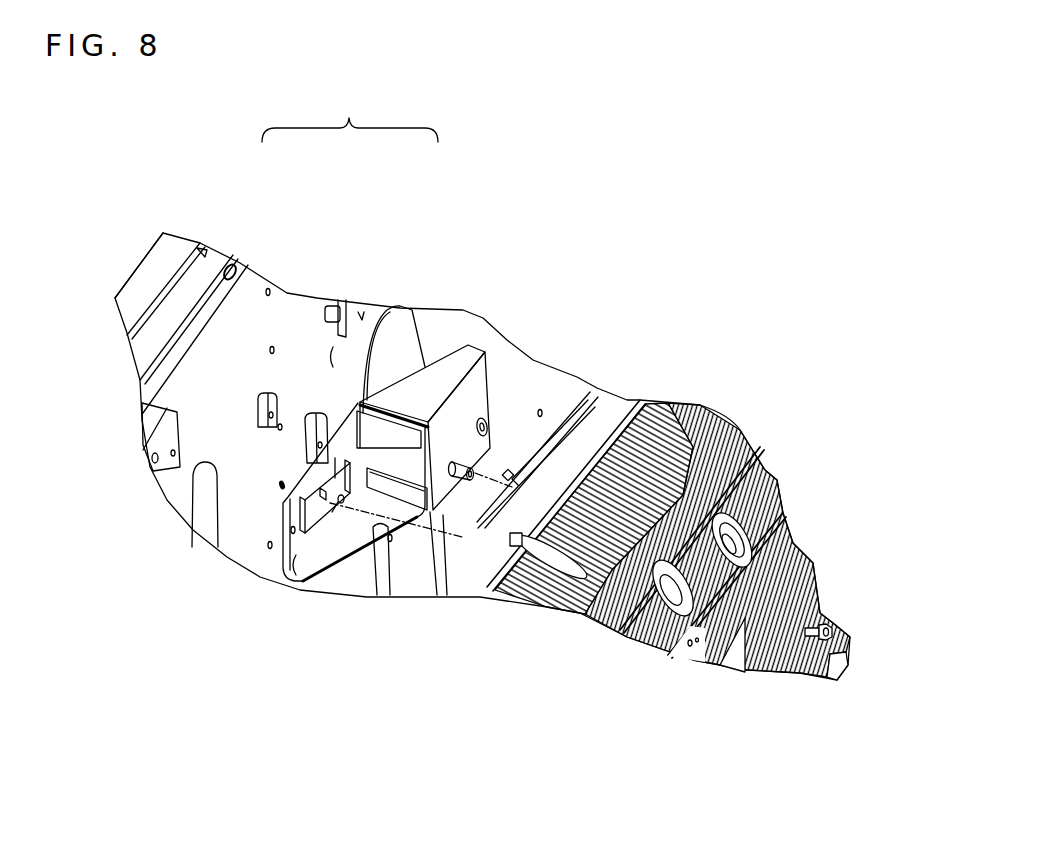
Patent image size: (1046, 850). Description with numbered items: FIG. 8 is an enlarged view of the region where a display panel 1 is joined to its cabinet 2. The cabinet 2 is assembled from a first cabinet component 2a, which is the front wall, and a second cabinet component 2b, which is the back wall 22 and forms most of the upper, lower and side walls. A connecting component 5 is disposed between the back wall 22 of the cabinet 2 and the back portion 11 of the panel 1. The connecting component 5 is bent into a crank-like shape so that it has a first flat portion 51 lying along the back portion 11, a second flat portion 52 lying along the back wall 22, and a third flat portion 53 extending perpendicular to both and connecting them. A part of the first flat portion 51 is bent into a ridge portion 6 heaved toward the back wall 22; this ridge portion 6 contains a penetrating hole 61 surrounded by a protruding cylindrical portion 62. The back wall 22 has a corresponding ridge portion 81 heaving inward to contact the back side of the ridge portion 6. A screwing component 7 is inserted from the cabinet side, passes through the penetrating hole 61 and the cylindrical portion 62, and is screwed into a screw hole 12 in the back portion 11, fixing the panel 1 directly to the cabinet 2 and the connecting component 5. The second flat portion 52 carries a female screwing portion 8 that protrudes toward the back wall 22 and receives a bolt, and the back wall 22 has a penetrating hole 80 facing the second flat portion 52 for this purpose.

The Liquid Crystal Display panel 1 is at (177, 490).
The cabinet 2 is at (350, 117).
The first cabinet component 2a is at (177, 243).
The second cabinet component 2b is at (603, 403).
The connecting component 5 is at (375, 489).
The ridge portion 6 is at (318, 567).
The screwing component 7 is at (822, 621).
The female screwing portion 8 is at (461, 481).
The back portion 11 is at (212, 400).
The screw hole 12 is at (279, 482).
The back wall 22 is at (747, 437).
The first flat portion 51 is at (297, 550).
The second flat portion 52 is at (482, 390).
The third flat portion 53 is at (405, 470).
The penetrating hole 61 is at (340, 505).
The cylindrical portion 62 is at (326, 492).
The penetrating hole 80 is at (727, 531).
The ridge portion 81 is at (670, 653).